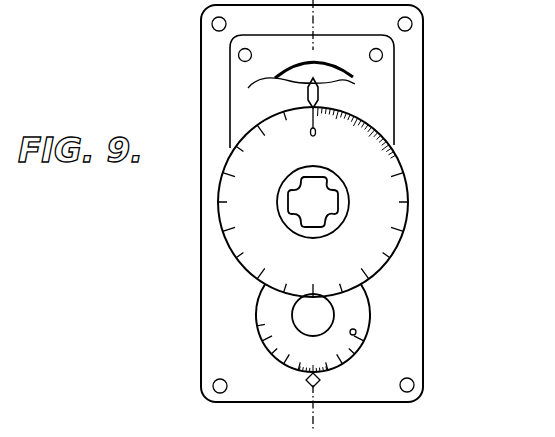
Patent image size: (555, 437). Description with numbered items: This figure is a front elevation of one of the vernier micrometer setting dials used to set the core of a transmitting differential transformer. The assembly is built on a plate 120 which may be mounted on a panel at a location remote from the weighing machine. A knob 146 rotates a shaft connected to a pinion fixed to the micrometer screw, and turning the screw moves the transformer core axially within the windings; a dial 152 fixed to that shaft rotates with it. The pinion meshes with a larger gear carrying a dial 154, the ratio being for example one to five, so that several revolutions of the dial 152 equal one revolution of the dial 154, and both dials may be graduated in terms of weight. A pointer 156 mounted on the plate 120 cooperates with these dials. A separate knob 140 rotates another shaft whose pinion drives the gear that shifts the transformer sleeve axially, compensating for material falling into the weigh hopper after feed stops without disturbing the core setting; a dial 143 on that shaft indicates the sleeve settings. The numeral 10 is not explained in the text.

The instrument apparatus 10 is at (305, 415).
The plate 120 is at (423, 283).
The knob 140 is at (323, 313).
The dial 143 is at (262, 302).
The knob 146 is at (288, 204).
The dial 152 is at (406, 205).
The dial 154 is at (295, 87).
The pointer 156 is at (318, 97).